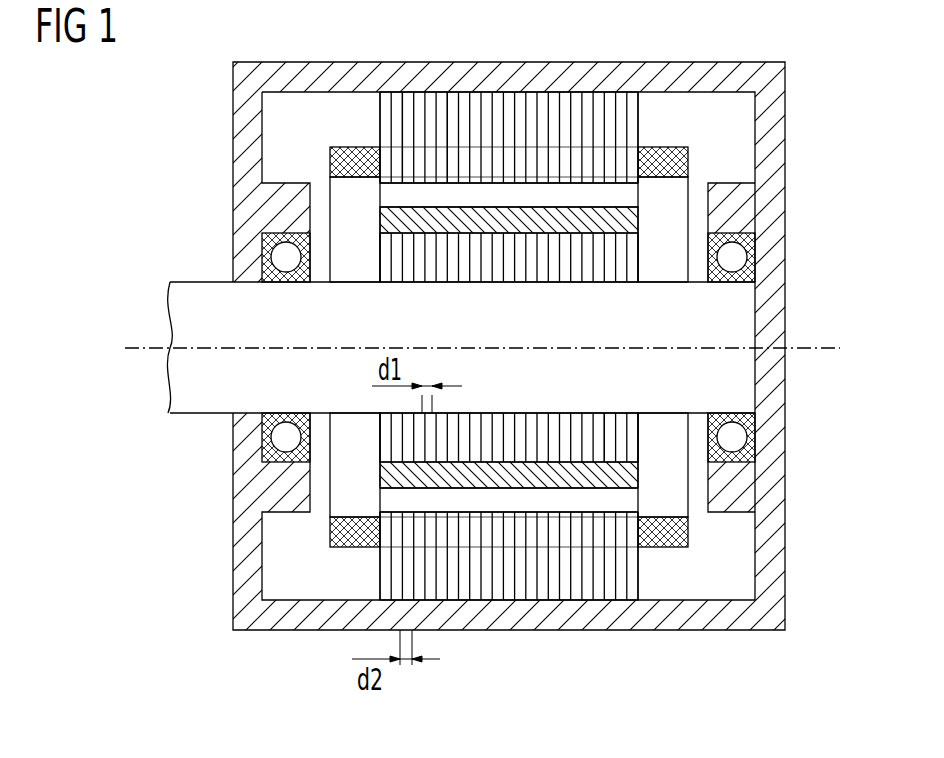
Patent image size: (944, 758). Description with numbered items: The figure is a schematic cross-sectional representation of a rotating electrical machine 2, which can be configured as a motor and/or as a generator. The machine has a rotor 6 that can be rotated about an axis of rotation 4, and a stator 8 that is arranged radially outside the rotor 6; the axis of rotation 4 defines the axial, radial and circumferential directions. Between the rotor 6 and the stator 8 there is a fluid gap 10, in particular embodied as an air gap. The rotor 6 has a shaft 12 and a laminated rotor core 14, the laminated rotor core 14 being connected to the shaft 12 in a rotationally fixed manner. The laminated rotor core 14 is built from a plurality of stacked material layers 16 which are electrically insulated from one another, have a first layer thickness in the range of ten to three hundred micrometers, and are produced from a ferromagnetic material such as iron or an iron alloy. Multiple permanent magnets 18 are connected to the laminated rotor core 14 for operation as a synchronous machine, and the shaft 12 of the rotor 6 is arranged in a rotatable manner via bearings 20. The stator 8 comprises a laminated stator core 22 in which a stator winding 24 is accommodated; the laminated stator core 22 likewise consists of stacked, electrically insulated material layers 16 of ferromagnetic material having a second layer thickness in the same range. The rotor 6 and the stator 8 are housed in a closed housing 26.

The rotating electrical machine 2 is at (764, 56).
The axis of rotation 4 is at (142, 347).
The rotor 6 is at (645, 262).
The stator 8 is at (643, 122).
The fluid gap 10 is at (421, 205).
The shaft 12 is at (188, 398).
The laminated rotor core 14 is at (639, 431).
The material layers 16 is at (395, 147).
The permanent magnets 18 is at (605, 471).
The bearings 20 is at (280, 260).
The laminated stator core 22 is at (378, 121).
The stator winding 24 is at (448, 158).
The housing 26 is at (700, 78).